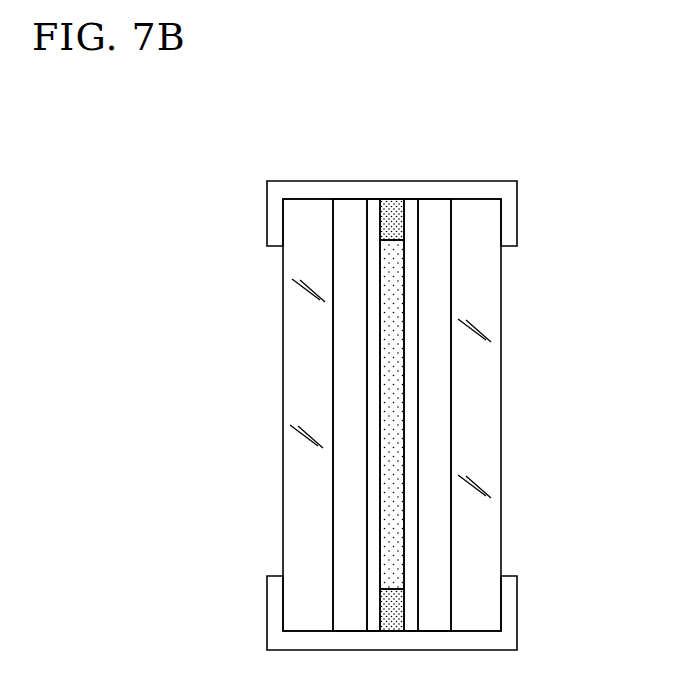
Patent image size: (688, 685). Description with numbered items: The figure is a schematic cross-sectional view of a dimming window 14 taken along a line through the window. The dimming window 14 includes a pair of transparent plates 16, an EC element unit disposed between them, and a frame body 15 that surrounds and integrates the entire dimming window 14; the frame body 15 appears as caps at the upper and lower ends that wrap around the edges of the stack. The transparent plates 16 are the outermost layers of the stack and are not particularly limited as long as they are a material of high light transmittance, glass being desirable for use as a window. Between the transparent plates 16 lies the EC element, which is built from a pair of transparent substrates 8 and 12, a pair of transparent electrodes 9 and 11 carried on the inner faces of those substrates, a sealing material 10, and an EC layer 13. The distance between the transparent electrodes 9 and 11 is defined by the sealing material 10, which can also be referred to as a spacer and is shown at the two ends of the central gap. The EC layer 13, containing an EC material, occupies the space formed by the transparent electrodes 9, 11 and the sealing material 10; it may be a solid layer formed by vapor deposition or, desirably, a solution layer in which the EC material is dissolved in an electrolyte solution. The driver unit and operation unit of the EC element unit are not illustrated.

The dimming window 14 is at (246, 146).
The transparent substrate 8 is at (348, 201).
The transparent electrode 9 is at (375, 201).
The sealing material 10 is at (395, 201).
The transparent electrode 11 is at (411, 201).
The transparent substrate 12 is at (437, 201).
The EC layer 13 is at (395, 293).
The frame body 15 is at (502, 192).
The transparent plate 16 is at (292, 514).